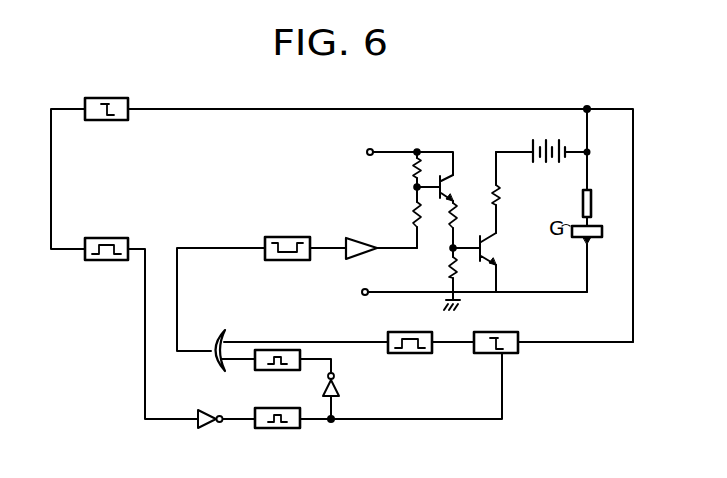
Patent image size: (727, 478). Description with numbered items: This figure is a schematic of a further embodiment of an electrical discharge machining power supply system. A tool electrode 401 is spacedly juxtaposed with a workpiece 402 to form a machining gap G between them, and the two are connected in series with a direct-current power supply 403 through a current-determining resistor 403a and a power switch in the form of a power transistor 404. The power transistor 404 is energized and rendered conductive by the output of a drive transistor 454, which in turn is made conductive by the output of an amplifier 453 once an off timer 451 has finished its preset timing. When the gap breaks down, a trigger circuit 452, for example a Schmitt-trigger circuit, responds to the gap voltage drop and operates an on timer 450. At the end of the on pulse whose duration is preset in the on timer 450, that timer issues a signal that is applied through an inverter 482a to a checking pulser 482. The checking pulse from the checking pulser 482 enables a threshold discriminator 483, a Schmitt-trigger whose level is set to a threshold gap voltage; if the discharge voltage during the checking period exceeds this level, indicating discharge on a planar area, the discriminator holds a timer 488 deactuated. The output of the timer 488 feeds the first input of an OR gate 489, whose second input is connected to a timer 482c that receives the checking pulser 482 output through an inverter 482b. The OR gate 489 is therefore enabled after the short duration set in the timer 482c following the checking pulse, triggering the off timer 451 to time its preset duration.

The trigger circuit 452 is at (98, 121).
The on timer 450 is at (96, 261).
The off timer 451 is at (276, 261).
The amplifier 453 is at (356, 260).
The drive transistor 454 is at (456, 185).
The direct-current power supply 403 is at (531, 160).
The current-determining resistor 403a is at (500, 192).
The tool electrode 401 is at (611, 204).
The power transistor 404 is at (484, 246).
The workpiece 402 is at (578, 240).
The OR gate 489 is at (210, 364).
The timer 482c is at (266, 371).
The inverter 482b is at (342, 386).
The timer 488 is at (398, 354).
The threshold discriminator 483 is at (506, 354).
The inverter 482a is at (207, 429).
The checking pulser 482 is at (277, 429).